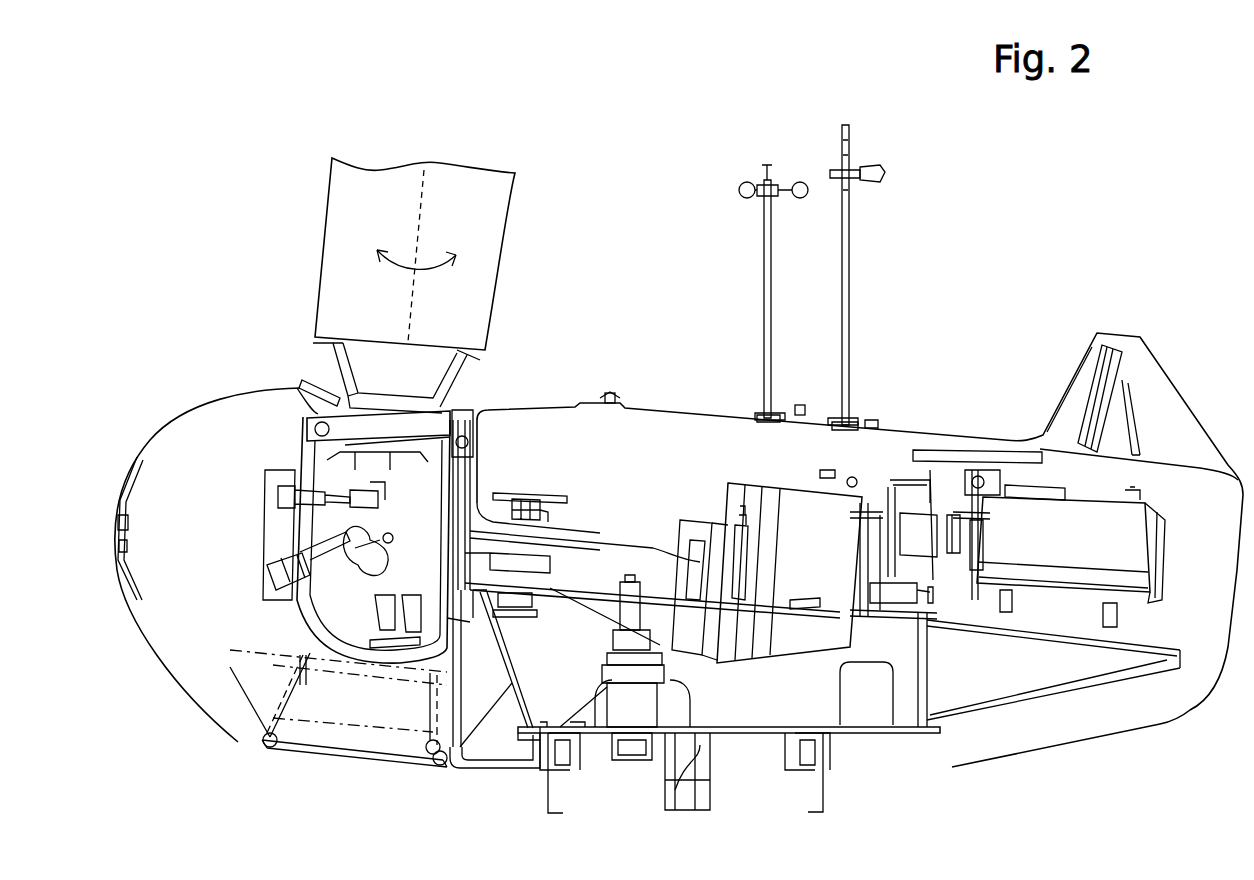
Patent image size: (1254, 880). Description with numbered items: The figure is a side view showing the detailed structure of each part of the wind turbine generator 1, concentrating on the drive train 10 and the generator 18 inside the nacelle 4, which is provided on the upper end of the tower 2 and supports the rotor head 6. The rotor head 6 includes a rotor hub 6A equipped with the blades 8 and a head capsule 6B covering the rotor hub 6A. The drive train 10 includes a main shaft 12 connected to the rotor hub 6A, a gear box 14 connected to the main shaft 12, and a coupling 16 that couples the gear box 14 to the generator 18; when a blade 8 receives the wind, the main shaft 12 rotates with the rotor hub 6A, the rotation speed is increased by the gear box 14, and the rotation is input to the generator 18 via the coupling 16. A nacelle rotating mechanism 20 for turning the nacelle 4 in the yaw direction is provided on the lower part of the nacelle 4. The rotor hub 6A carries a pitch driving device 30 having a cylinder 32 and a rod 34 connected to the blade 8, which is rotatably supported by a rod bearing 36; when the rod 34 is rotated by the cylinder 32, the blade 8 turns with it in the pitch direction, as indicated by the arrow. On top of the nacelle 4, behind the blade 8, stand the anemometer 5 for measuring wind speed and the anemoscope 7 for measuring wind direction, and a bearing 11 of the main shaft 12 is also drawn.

The wind turbine generator 1 is at (1212, 283).
The tower 2 is at (827, 800).
The nacelle 4 is at (987, 435).
The anemometer 5 is at (766, 172).
The rotor head 6 is at (104, 463).
The rotor hub 6A is at (290, 632).
The head capsule 6B is at (200, 710).
The anemoscope 7 is at (873, 167).
The blade 8 is at (345, 220).
The drive train 10 is at (668, 432).
The main bearing 11 is at (557, 515).
The main shaft 12 is at (588, 527).
The gear box 14 is at (803, 500).
The coupling 16 is at (943, 507).
The generator 18 is at (1103, 513).
The nacelle rotating mechanism 20 is at (627, 785).
The pitch driving device 30 is at (272, 405).
The cylinder 32 is at (317, 487).
The rod 34 is at (393, 477).
The rod bearing 36 is at (318, 408).